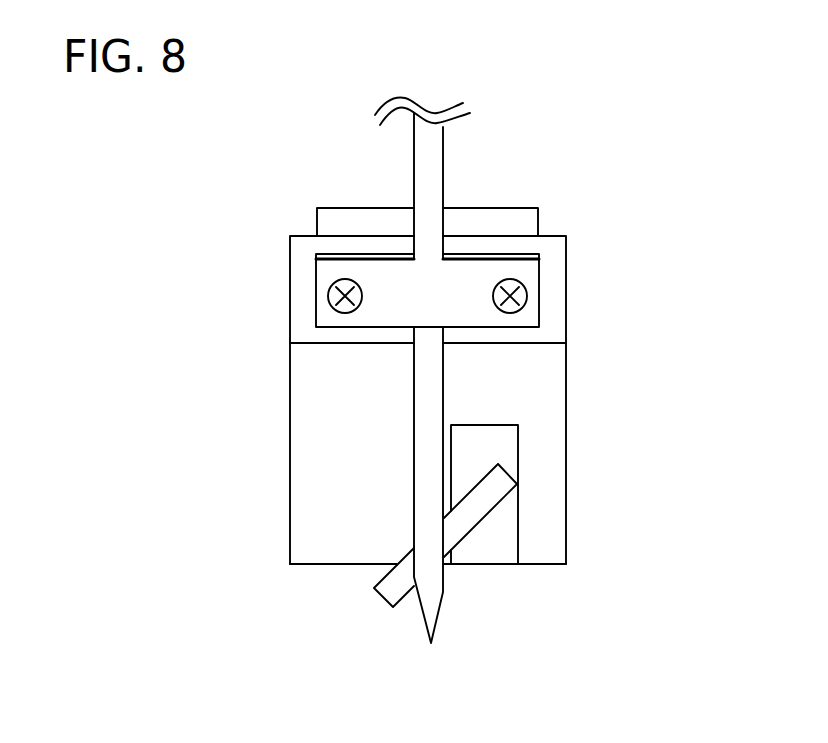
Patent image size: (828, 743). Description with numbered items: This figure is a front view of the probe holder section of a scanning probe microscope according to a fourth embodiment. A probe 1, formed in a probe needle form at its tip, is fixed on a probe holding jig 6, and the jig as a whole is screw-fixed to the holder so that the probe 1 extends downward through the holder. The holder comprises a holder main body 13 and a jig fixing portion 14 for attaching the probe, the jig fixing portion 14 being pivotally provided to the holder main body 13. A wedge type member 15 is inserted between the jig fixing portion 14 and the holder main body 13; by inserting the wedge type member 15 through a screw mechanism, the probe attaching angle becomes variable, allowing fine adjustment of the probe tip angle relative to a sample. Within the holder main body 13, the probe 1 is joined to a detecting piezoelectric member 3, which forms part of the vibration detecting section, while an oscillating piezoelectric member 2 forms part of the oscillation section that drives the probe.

The probe 1 is at (427, 482).
The oscillating piezoelectric member 2 is at (484, 439).
The detecting piezoelectric member 3 is at (472, 509).
The probe holding jig 6 is at (400, 282).
The holder main body 13 is at (338, 404).
The jig fixing portion 14 is at (553, 277).
The wedge type member 15 is at (512, 218).